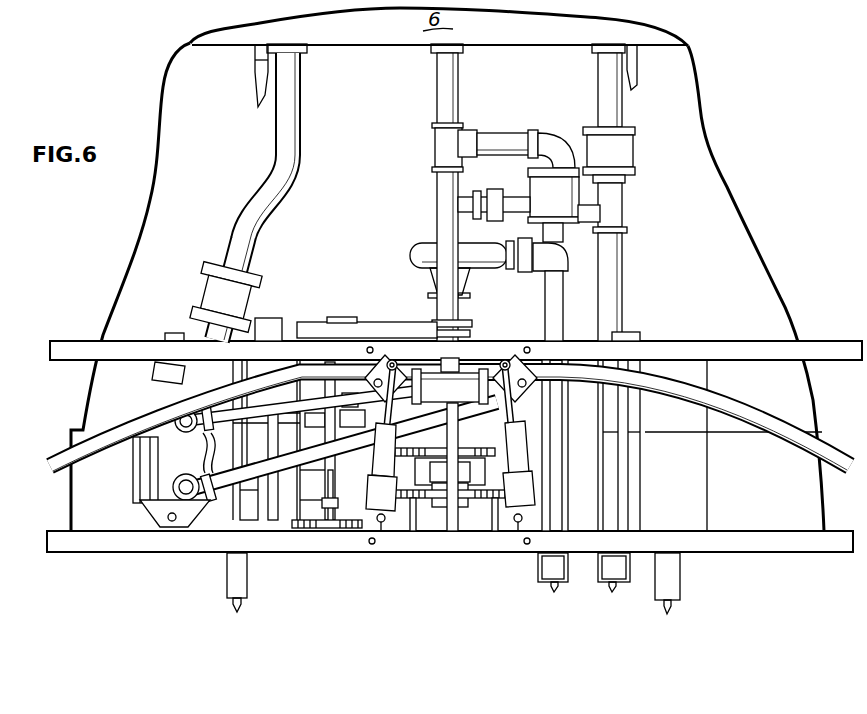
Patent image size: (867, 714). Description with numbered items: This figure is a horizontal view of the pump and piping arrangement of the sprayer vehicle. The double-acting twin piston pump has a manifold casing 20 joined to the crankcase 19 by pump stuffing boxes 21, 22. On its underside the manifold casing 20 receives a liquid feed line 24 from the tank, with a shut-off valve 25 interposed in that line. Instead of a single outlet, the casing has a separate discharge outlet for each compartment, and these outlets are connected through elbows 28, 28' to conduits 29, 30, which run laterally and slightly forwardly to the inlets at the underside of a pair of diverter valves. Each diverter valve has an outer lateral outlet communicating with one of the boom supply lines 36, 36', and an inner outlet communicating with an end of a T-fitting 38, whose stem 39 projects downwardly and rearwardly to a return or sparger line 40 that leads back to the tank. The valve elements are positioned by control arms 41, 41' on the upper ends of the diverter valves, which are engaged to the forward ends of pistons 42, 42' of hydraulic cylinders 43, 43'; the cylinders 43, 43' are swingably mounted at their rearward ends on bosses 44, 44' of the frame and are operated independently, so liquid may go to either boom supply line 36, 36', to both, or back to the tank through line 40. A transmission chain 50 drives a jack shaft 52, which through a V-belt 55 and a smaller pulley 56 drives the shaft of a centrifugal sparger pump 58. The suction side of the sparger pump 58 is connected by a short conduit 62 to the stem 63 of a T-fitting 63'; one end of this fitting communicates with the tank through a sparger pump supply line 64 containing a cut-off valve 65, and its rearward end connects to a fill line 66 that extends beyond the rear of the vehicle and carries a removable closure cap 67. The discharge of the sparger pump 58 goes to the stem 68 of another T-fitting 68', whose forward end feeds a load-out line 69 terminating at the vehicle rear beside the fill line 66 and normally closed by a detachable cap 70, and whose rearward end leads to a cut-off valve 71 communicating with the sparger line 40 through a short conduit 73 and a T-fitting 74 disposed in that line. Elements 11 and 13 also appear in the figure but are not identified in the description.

The nut block 11 is at (482, 498).
The vertical shaft 13 is at (453, 525).
The crankcase 19 is at (348, 503).
The manifold casing 20 is at (157, 505).
The pump stuffing box 21 is at (265, 507).
The pump stuffing box 22 is at (233, 507).
The liquid feed line 24 is at (300, 95).
The shut-off valve 25 is at (198, 292).
The elbow 28 is at (335, 498).
The elbow 28' is at (280, 439).
The conduit 29 is at (287, 533).
The conduit 30 is at (263, 407).
The boom supply line 36 is at (250, 387).
The boom supply line 36' is at (650, 389).
The T-fitting 38 is at (466, 378).
The stem 39 is at (457, 358).
The return conduit 40 is at (444, 80).
The control arm 41 is at (546, 336).
The control arm 41' is at (392, 324).
The piston 42 is at (575, 352).
The piston 42' is at (383, 331).
The hydraulic cylinder 43 is at (494, 545).
The hydraulic cylinder 43' is at (421, 543).
The boss 44 is at (525, 493).
The boss 44' is at (384, 489).
The transmission chain 50 is at (412, 498).
The jack shaft 52 is at (327, 366).
The V-belt 55 is at (313, 323).
The pulley 56 is at (462, 330).
The sparger pump 58 is at (412, 249).
The short conduit 62 is at (508, 200).
The stem 63 is at (585, 236).
The T-fitting 63' is at (641, 207).
The sparger pump supply line 64 is at (618, 107).
The cut-off valve 65 is at (622, 147).
The fill line 66 is at (618, 268).
The removable closure cap 67 is at (617, 574).
The stem 68 is at (540, 277).
The T-fitting 68' is at (574, 303).
The load-out line 69 is at (552, 470).
The detachable cap 70 is at (557, 584).
The cut-off valve 71 is at (548, 192).
The short conduit 73 is at (488, 135).
The T-fitting 74 is at (435, 143).